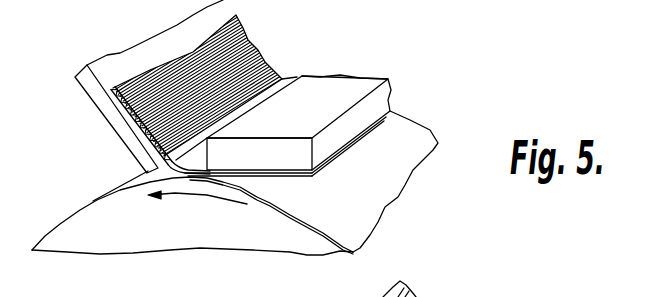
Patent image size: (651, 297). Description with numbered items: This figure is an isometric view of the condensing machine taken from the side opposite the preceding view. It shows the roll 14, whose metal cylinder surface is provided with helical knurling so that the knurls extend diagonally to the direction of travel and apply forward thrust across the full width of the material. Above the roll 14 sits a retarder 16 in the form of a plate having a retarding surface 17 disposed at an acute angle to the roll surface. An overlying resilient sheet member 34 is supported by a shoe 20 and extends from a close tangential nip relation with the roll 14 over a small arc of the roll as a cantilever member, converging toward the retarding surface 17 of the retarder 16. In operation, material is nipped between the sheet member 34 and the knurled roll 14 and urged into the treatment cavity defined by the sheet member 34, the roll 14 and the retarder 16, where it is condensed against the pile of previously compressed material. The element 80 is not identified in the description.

The roll 14 is at (88, 238).
The retarder 16 is at (132, 140).
The retarding surface 17 is at (118, 53).
The shoe 20 is at (328, 142).
The resilient sheet member 34 is at (285, 185).
The frame member 80 is at (410, 145).